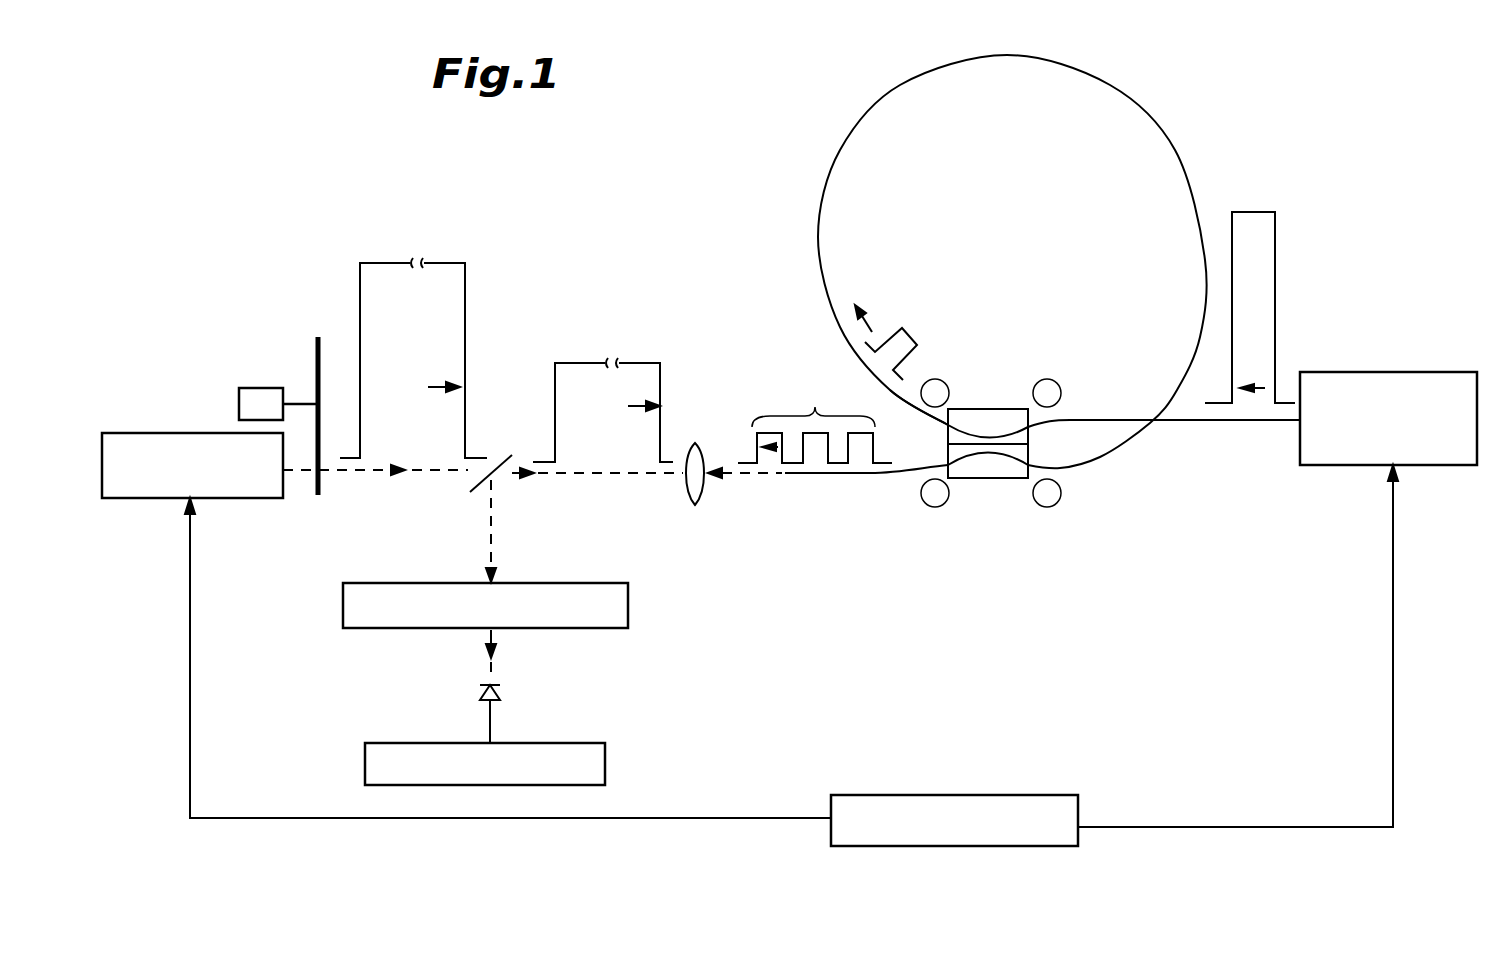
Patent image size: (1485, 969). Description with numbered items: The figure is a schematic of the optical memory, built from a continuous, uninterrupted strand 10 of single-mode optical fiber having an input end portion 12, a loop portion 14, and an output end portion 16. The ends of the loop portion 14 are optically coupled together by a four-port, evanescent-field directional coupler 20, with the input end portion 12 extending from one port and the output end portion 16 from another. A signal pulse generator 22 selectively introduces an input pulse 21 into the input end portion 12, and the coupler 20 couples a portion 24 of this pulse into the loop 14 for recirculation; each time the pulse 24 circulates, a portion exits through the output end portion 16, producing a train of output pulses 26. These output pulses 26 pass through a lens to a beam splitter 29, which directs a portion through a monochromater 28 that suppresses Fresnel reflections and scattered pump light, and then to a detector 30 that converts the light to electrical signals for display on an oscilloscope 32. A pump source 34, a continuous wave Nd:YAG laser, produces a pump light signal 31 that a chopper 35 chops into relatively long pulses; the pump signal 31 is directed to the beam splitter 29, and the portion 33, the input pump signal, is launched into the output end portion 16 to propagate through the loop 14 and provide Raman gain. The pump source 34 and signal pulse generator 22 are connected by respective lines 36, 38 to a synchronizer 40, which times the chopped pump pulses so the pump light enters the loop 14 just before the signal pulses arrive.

The strand of optical fiber 10 is at (1115, 72).
The input end portion 12 is at (1183, 422).
The loop portion 14 is at (1160, 120).
The output end portion 16 is at (843, 478).
The directional coupler 20 is at (995, 408).
The input pulse 21 is at (1277, 290).
The signal pulse generator 22 is at (1415, 372).
The coupled pulse portion 24 is at (905, 330).
The output pulses 26 is at (815, 419).
The monochromater 28 is at (630, 603).
The beam splitter 29 is at (500, 455).
The detector 30 is at (502, 690).
The pump light signal 31 is at (360, 303).
The oscilloscope 32 is at (365, 745).
The input pump signal 33 is at (572, 362).
The pump source 34 is at (158, 432).
The chopper 35 is at (318, 362).
The line 36 is at (718, 817).
The line 38 is at (1245, 826).
The synchronizer 40 is at (1005, 795).